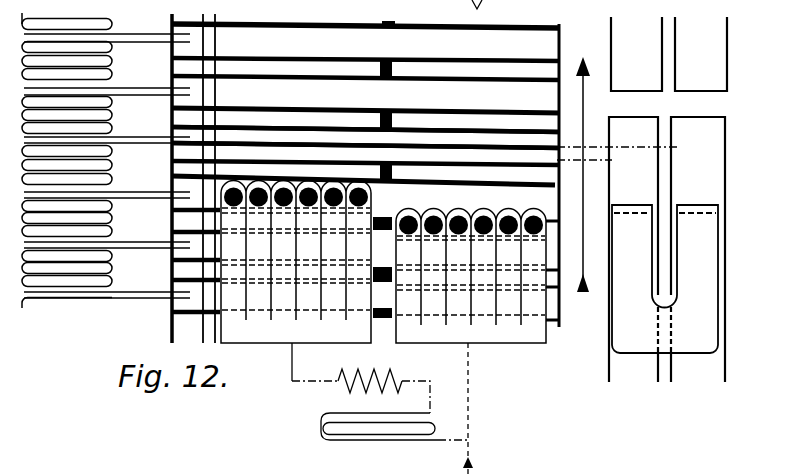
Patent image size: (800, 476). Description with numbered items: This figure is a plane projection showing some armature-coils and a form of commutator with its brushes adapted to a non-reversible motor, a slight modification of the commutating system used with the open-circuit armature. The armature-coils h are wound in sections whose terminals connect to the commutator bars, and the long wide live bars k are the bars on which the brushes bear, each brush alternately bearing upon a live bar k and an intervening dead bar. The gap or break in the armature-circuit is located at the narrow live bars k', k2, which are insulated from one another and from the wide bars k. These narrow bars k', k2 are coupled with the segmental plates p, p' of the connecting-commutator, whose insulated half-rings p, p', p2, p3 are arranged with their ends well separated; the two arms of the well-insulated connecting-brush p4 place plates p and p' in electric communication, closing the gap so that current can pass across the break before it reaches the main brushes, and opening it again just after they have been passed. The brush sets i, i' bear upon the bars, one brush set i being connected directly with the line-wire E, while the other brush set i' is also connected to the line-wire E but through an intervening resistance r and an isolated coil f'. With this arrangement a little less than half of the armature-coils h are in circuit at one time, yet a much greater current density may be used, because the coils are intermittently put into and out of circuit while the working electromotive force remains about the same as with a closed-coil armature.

The induction coil h is at (106, 160).
The live commutator-bar k is at (366, 178).
The narrow live bar k' is at (366, 138).
The narrow live bar k2 is at (366, 154).
The coil box i is at (296, 228).
The coil box i' is at (471, 228).
The segmental plate p is at (633, 249).
The segmental plate p' is at (698, 249).
The segmental plate p2 is at (636, 54).
The segmental plate p3 is at (701, 54).
The connecting-brush p4 is at (665, 279).
The resistance r is at (361, 378).
The isolated coil f' is at (382, 426).
The line-wire E is at (475, 409).